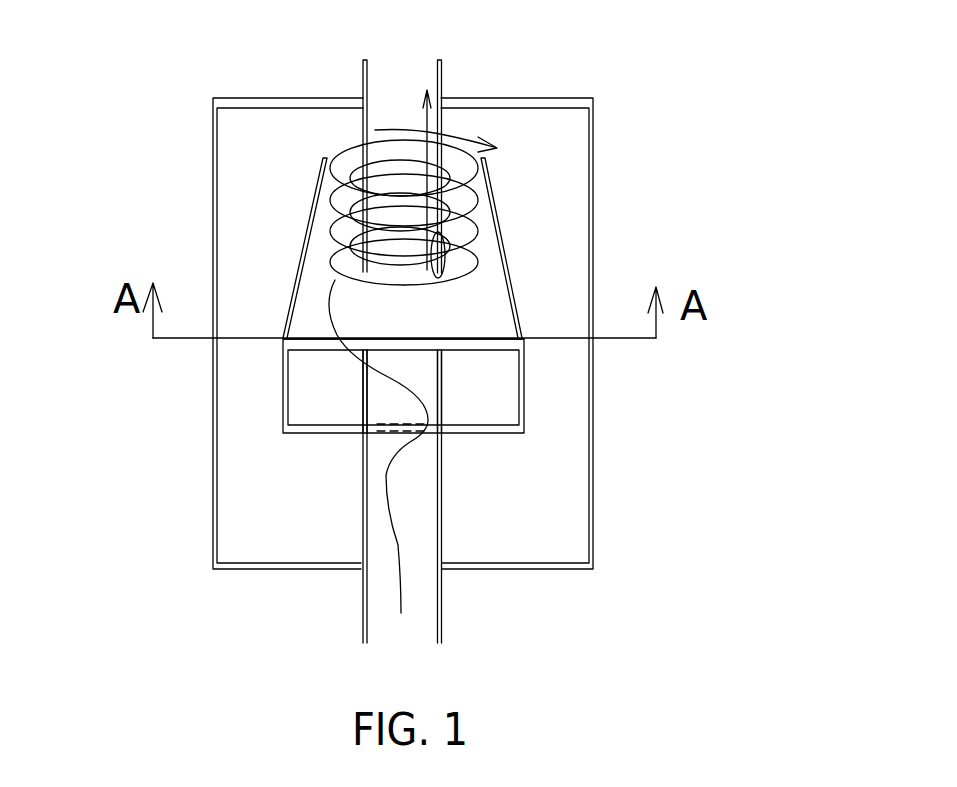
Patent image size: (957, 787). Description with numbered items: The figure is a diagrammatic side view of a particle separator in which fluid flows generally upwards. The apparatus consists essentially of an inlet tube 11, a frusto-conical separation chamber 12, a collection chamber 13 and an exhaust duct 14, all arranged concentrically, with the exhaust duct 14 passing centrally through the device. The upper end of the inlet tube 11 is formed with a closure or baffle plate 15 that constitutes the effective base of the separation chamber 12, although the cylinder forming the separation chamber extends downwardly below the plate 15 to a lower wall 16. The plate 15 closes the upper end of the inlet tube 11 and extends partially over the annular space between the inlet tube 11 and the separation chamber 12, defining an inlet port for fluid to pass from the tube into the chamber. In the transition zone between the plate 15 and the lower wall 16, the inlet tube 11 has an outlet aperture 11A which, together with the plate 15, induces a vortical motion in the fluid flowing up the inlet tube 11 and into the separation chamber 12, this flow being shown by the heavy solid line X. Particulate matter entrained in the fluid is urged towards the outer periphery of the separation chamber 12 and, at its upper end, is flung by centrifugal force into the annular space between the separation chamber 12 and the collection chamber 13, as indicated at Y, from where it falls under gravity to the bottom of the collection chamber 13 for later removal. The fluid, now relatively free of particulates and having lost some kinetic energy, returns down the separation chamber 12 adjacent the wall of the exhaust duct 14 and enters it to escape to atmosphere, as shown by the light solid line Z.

The inlet tube 11 is at (442, 590).
The outlet aperture 11A is at (385, 398).
The frusto-conical separation chamber 12 is at (505, 248).
The collection chamber 13 is at (517, 467).
The exhaust duct 14 is at (443, 68).
The baffle plate 15 is at (427, 343).
The lower wall 16 is at (312, 432).
The fluid flow line X is at (385, 473).
The particulate path indication Y is at (500, 148).
The cleaned fluid flow line Z is at (428, 117).